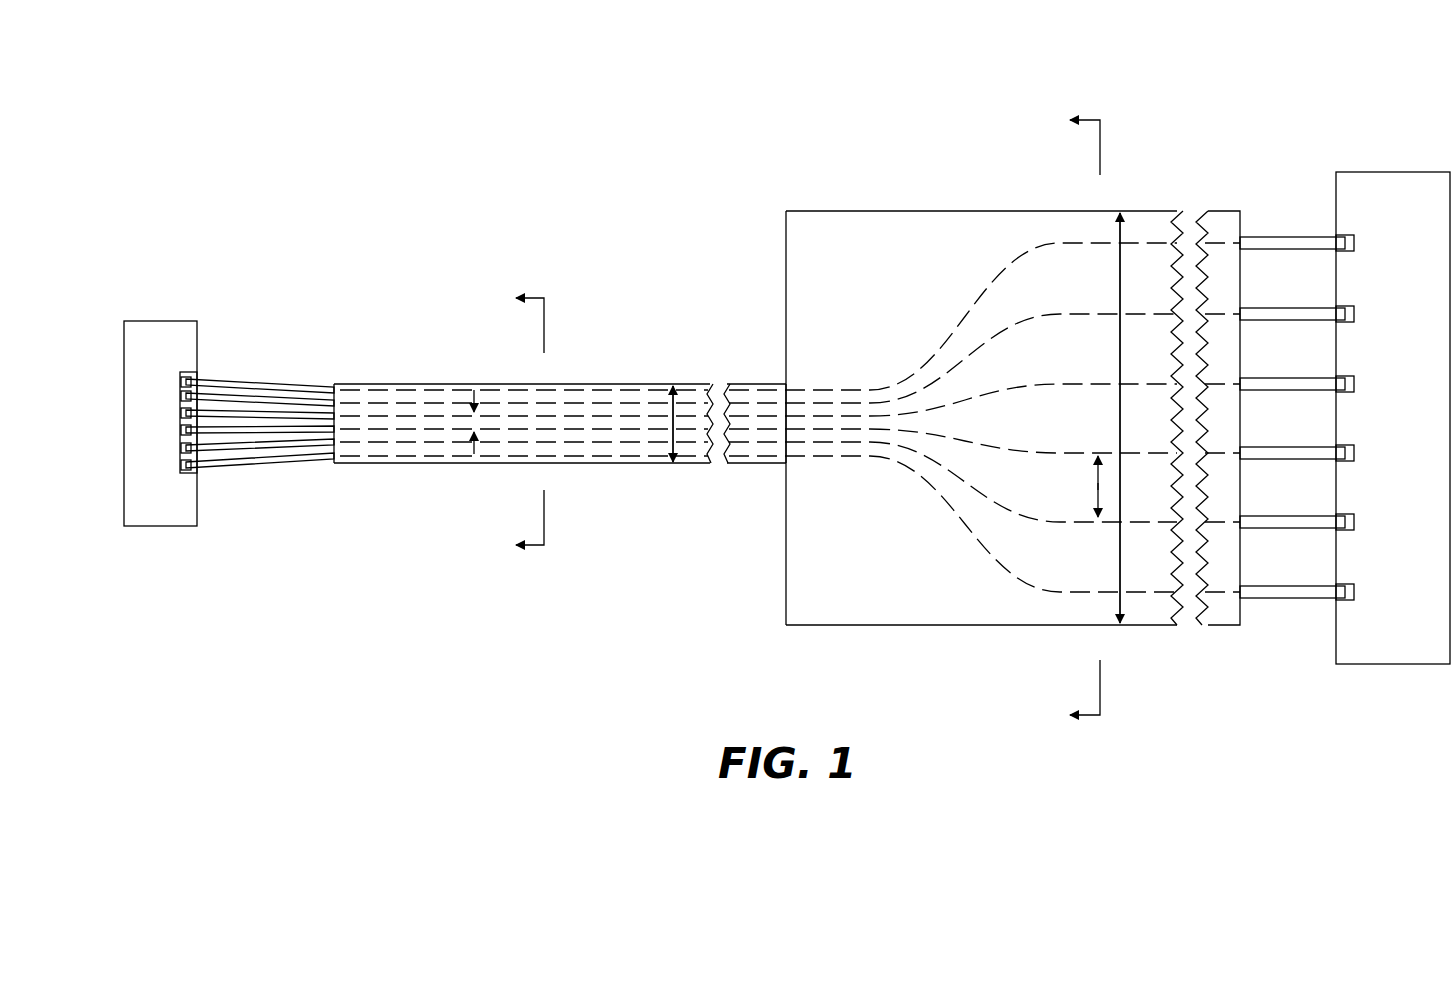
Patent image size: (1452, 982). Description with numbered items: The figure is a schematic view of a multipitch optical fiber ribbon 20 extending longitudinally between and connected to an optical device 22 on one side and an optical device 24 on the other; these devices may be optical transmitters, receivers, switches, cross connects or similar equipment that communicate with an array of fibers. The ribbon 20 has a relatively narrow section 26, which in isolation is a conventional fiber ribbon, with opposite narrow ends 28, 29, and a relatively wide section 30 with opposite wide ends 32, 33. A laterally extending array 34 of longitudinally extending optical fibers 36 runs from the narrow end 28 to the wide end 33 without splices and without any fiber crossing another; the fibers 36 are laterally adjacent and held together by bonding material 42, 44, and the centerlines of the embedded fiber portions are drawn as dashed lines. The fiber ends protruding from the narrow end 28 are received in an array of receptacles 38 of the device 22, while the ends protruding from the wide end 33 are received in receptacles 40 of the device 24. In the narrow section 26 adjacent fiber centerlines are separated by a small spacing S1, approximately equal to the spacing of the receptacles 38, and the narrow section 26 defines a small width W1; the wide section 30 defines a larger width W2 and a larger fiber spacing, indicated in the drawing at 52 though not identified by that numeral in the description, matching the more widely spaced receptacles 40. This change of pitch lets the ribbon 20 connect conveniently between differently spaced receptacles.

The multipitch optical fiber ribbon 20 is at (786, 118).
The optical device 22 is at (147, 321).
The optical device 24 is at (1401, 172).
The narrow section 26 is at (611, 382).
The narrow end 28 is at (334, 466).
The narrow end 29 is at (788, 466).
The wide section 30 is at (960, 434).
The wide end 32 is at (786, 586).
The wide end 33 is at (1241, 613).
The array of optical fibers 34 is at (312, 368).
The optical fibers 36 is at (274, 414).
The array of receptacles 38 is at (170, 486).
The receptacles 40 is at (1354, 243).
The bonding material 42 is at (418, 465).
The bonding material 44 is at (866, 210).
The fiber spacing at output 52 is at (1096, 488).
The separation spacing S1 is at (472, 420).
The width W1 is at (667, 424).
The width W2 is at (1122, 418).